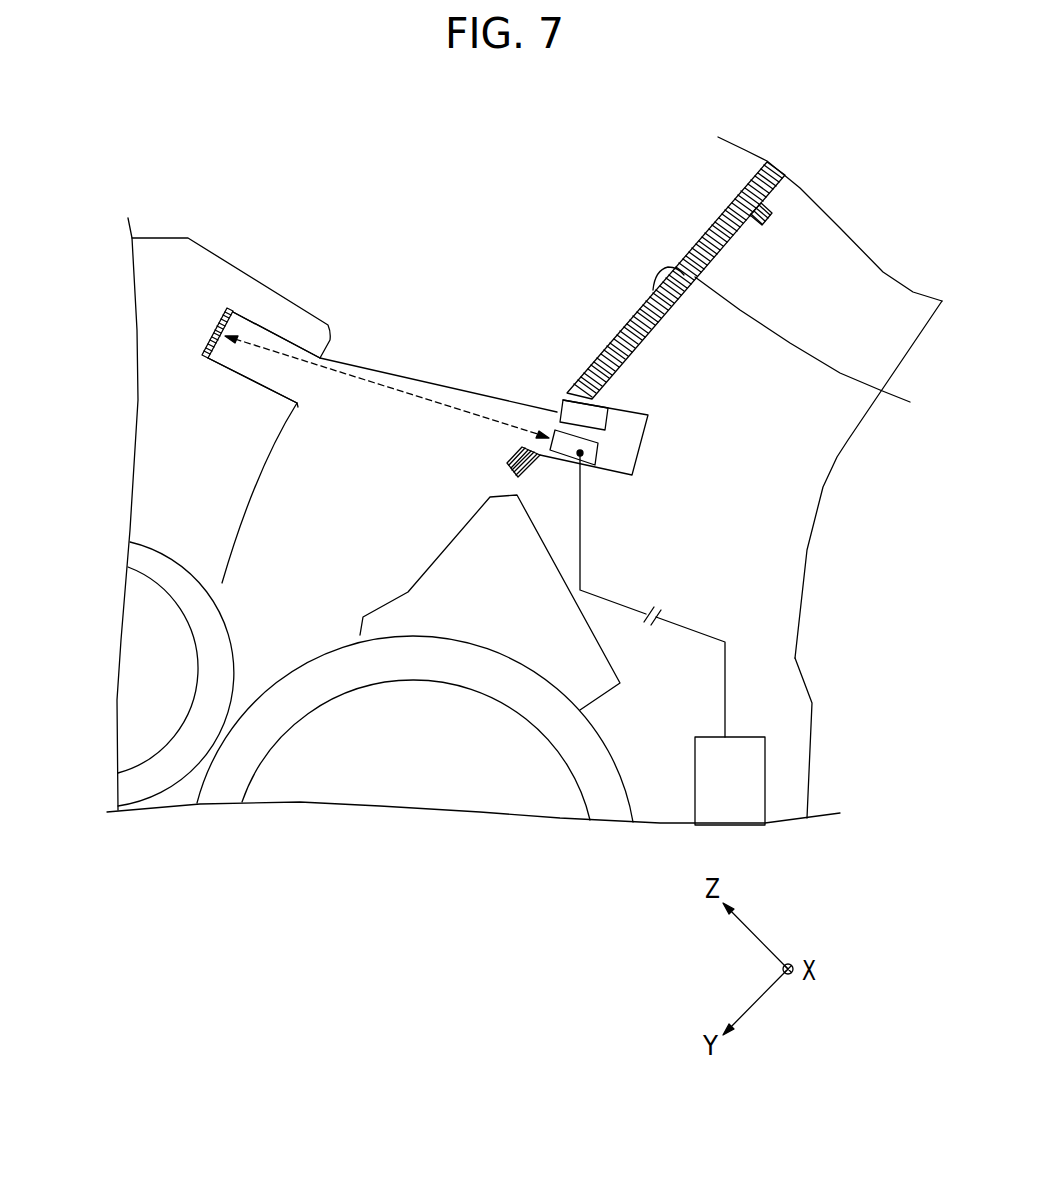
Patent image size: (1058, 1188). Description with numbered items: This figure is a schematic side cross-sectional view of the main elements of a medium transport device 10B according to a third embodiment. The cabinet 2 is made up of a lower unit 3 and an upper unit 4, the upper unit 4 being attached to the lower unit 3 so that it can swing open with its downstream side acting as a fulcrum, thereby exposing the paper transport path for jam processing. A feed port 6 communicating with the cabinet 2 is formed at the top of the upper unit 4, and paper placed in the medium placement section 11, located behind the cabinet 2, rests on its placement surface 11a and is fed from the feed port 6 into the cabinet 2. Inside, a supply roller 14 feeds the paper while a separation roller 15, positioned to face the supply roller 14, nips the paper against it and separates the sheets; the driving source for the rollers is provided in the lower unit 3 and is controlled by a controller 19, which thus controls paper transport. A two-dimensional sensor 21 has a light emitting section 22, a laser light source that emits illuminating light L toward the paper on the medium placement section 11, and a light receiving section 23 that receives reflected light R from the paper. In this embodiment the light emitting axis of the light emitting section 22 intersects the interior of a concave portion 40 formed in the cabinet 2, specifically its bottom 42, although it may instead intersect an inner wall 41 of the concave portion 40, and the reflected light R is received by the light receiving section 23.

The cabinet 2 is at (509, 482).
The lower unit 3 is at (812, 727).
The upper unit 4 is at (197, 238).
The feed port 6 is at (393, 333).
The medium transport device 10B is at (843, 597).
The medium placement section 11 is at (827, 475).
The placement surface 11a is at (907, 402).
The supply roller 14 is at (370, 760).
The separation roller 15 is at (125, 692).
The controller 19 is at (763, 770).
The two-dimensional sensor 21 is at (643, 478).
The light emitting section 22 is at (612, 420).
The light receiving section 23 is at (600, 462).
The concave portion 40 is at (302, 395).
The inner wall 41 is at (268, 333).
The bottom 42 is at (234, 327).
The illuminating light L is at (543, 405).
The reflected light R is at (497, 427).